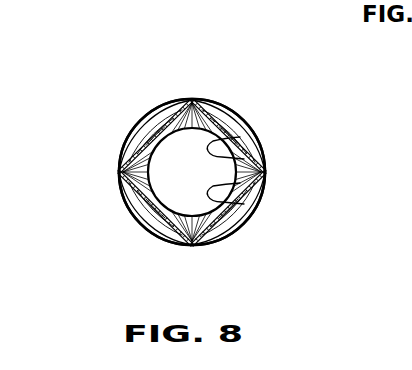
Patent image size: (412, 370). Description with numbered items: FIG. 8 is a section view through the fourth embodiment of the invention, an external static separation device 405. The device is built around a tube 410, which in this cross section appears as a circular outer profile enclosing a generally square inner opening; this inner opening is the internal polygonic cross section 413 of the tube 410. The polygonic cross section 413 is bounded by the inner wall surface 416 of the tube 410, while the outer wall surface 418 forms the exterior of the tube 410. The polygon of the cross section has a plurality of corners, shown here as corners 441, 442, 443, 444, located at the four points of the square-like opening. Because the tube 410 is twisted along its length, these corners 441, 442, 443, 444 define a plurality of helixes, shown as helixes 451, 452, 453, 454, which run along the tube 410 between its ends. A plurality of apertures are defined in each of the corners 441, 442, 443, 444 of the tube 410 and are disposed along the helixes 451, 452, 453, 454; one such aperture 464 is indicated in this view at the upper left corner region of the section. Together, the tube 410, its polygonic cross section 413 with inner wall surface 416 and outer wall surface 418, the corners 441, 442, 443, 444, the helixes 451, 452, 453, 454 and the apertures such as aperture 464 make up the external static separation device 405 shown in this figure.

The external static separation device 405 is at (127, 82).
The tube 410 is at (143, 120).
The internal polygonic cross section 413 is at (232, 150).
The inner wall surface 416 is at (222, 206).
The outer wall surface 418 is at (250, 146).
The corner 441 is at (257, 169).
The corner 442 is at (193, 243).
The corner 443 is at (123, 172).
The corner 444 is at (189, 100).
The helix 451 is at (250, 198).
The helix 452 is at (176, 237).
The helix 453 is at (126, 163).
The helix 454 is at (180, 131).
The aperture 464 is at (183, 101).